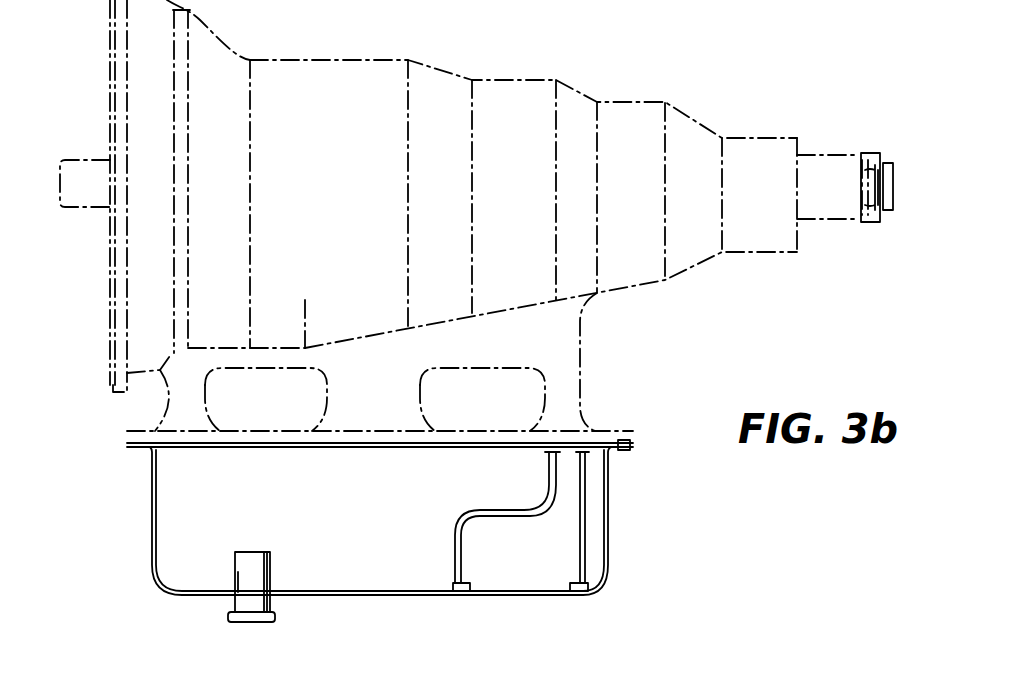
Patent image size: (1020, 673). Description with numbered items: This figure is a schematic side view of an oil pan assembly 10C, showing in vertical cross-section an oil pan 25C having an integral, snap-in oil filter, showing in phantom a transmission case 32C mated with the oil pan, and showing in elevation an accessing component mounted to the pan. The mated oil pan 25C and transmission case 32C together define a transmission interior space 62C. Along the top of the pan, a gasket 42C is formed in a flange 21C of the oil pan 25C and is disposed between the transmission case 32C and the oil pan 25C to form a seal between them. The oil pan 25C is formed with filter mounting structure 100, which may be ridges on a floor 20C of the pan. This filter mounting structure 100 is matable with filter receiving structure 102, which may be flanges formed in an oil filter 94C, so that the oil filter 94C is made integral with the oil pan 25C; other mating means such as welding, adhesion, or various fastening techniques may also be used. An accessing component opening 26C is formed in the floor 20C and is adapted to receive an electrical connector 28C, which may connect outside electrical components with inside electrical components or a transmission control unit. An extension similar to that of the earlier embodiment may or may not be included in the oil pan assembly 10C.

The oil pan assembly 10C is at (476, 334).
The transmission interior space 62C is at (555, 372).
The transmission case 32C is at (580, 397).
The gasket 42C is at (623, 440).
The flange 21C is at (625, 451).
The floor 20C is at (410, 526).
The oil pan 25C is at (609, 550).
The oil filter 94C is at (586, 506).
The filter receiving structure 102 is at (462, 578).
The filter mounting structure 100 is at (485, 571).
The electrical connector 28C is at (265, 610).
The accessing component opening 26C is at (238, 590).